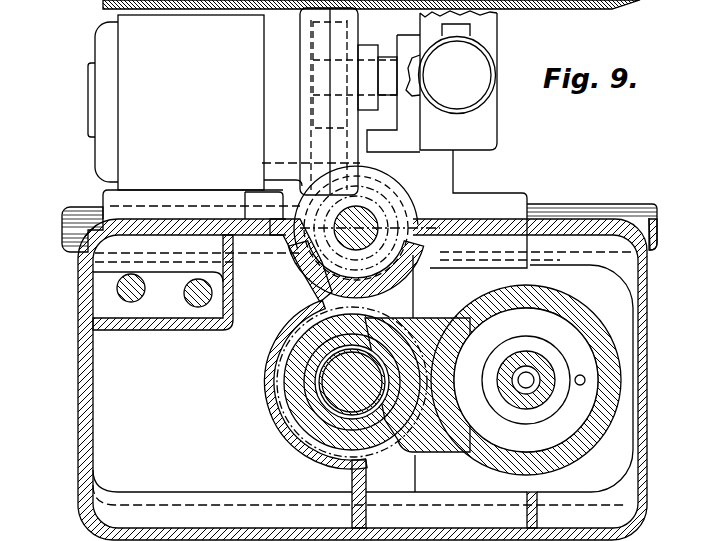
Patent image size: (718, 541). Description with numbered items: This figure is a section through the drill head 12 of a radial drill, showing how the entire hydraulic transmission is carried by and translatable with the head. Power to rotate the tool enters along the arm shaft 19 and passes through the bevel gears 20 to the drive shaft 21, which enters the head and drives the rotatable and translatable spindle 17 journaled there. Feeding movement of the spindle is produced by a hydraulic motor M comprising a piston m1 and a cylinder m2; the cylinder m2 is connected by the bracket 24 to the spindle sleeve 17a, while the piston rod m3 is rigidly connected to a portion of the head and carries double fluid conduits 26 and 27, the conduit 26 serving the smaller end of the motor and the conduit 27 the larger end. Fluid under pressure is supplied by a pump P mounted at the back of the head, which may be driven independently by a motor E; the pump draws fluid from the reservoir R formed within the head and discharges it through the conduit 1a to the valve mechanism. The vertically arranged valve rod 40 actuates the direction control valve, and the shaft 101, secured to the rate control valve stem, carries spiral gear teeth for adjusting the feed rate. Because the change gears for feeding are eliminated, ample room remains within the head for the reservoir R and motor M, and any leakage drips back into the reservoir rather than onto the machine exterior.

The conduit 1a is at (411, 62).
The drill head 12 is at (647, 423).
The spindle 17 is at (327, 378).
The spindle sleeve 17a is at (320, 407).
The arm shaft 19 is at (609, 208).
The bevel gears 20 is at (299, 170).
The drive shaft 21 is at (363, 203).
The bracket 24 is at (423, 326).
The fluid conduit 26 is at (527, 395).
The fluid conduit 27 is at (523, 362).
The valve rod 40 is at (185, 298).
The shaft 101 is at (149, 283).
The motor E is at (176, 102).
The pump P is at (496, 37).
The hydraulic motor M is at (593, 318).
The reservoir R is at (166, 426).
The piston m1 is at (493, 339).
The cylinder m2 is at (586, 458).
The piston rod m3 is at (598, 428).